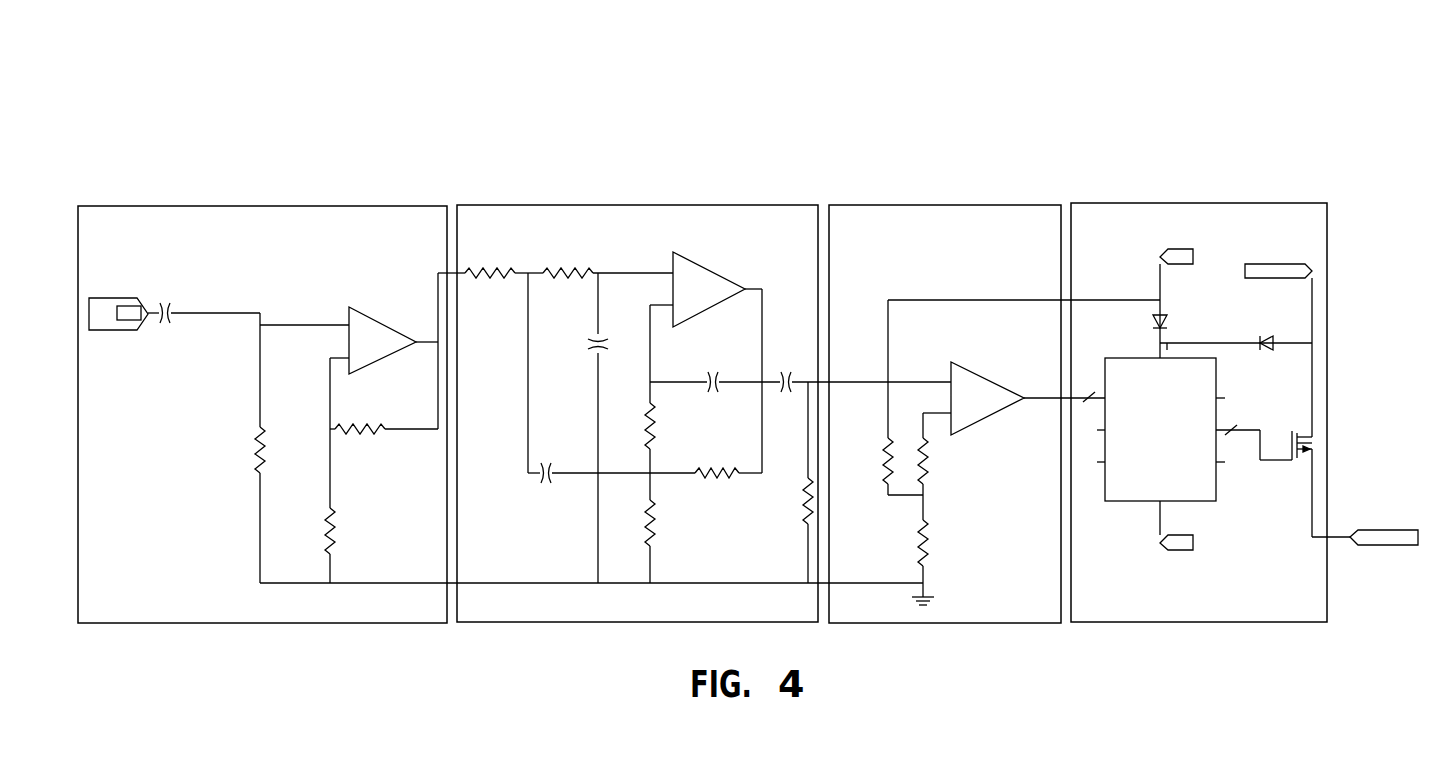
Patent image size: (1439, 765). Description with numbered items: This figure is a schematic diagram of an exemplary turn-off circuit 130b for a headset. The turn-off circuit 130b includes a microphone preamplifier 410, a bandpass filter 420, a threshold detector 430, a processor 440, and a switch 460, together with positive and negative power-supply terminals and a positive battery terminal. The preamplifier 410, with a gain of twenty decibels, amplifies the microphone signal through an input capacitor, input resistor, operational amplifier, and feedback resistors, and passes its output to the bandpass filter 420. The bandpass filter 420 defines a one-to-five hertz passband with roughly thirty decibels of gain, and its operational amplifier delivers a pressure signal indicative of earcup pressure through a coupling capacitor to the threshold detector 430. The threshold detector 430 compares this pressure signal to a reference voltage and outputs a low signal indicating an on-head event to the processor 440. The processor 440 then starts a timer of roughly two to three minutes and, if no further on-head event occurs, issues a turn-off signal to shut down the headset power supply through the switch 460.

The turn-off circuit 130b is at (1222, 121).
The microphone preamplifier 410 is at (262, 205).
The bandpass filter 420 is at (638, 205).
The threshold detector 430 is at (945, 205).
The processor 440 is at (1138, 358).
The switch 460 is at (1322, 449).